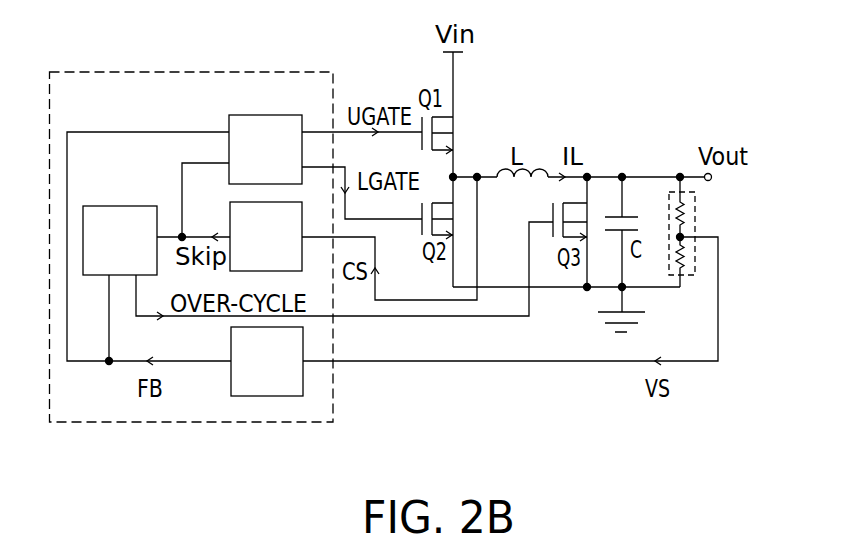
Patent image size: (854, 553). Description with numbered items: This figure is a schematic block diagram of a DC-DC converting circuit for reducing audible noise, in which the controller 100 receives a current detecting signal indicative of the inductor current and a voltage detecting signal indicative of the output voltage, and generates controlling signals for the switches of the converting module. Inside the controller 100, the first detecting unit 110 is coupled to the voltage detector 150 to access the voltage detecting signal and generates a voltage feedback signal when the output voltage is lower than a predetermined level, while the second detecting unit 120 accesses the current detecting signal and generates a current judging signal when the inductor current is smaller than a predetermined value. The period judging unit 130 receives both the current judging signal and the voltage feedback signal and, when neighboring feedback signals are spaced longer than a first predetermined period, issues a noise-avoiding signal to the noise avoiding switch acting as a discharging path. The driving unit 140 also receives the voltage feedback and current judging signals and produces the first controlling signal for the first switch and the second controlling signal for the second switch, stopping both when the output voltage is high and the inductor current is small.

The controller 100 is at (284, 73).
The first detecting unit 110 is at (283, 375).
The second detecting unit 120 is at (282, 250).
The period judging unit 130 is at (137, 253).
The driving unit 140 is at (281, 161).
The voltage detector 150 is at (692, 215).